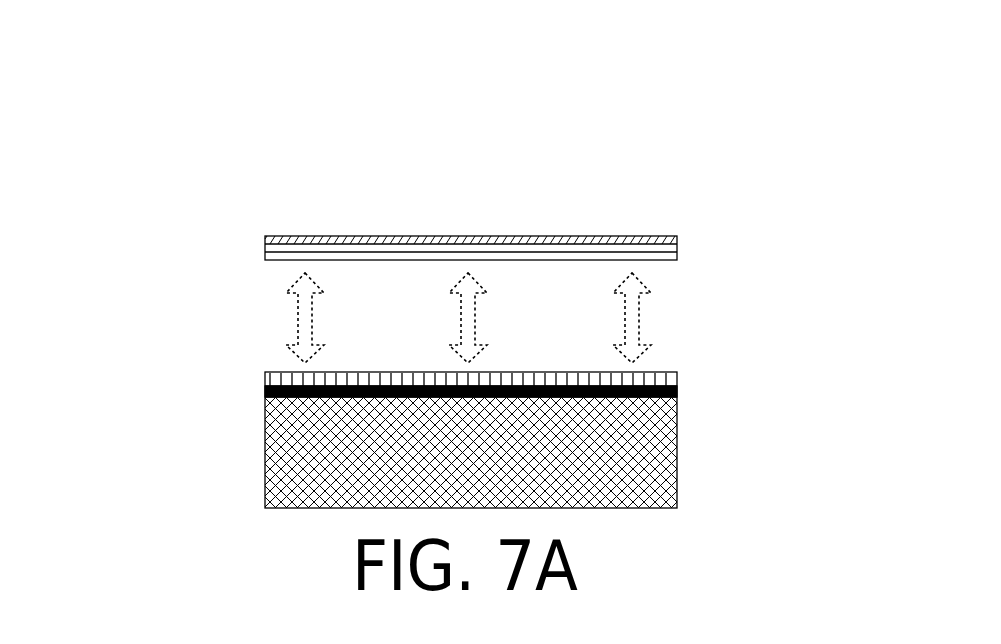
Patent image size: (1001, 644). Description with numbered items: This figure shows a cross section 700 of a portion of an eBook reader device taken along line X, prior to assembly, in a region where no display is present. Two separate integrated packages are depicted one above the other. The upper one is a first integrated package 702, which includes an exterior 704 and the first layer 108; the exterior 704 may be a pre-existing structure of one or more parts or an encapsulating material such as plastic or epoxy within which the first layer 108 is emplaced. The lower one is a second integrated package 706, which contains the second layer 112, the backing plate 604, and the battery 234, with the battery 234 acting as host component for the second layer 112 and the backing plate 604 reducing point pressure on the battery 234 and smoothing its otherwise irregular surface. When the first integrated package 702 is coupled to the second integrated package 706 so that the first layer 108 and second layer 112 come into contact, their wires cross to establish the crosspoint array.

The cross section 700 is at (593, 111).
The first integrated package 702 is at (425, 193).
The exterior 704 is at (460, 240).
The first layer 108 is at (605, 257).
The second integrated package 706 is at (478, 427).
The second layer 112 is at (293, 380).
The backing plate 604 is at (668, 399).
The battery 234 is at (635, 468).